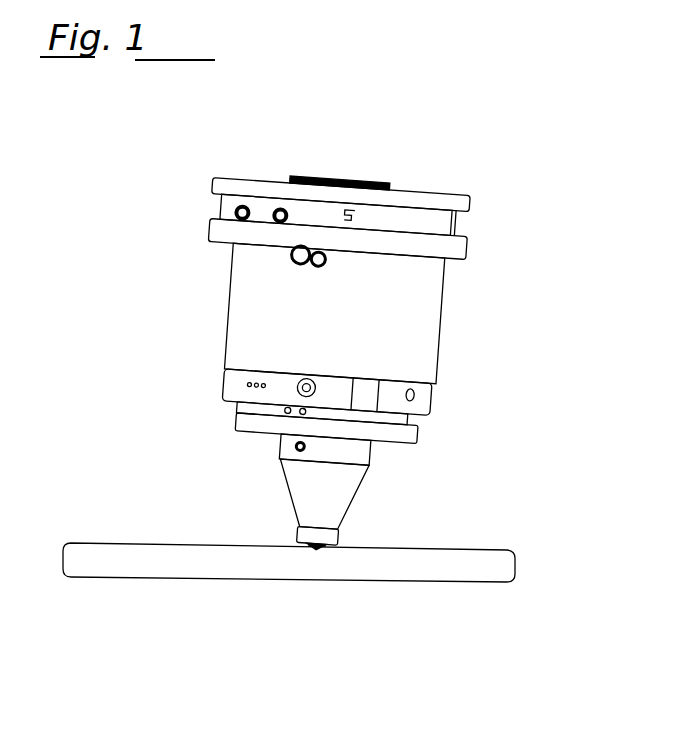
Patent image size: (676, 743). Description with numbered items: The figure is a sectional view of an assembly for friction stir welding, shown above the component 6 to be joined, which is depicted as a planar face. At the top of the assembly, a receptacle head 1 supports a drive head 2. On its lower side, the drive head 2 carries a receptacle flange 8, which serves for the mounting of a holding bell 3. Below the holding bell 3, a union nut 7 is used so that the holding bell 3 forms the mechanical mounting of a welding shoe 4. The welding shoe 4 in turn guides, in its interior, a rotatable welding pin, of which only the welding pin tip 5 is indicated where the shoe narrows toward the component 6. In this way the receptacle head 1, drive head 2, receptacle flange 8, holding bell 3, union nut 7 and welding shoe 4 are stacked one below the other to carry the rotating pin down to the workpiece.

The receptacle head 1 is at (385, 180).
The drive head 2 is at (392, 304).
The holding bell 3 is at (345, 484).
The welding shoe 4 is at (322, 548).
The welding pin tip 5 is at (316, 549).
The component 6 is at (227, 562).
The union nut 7 is at (312, 546).
The receptacle flange 8 is at (245, 420).